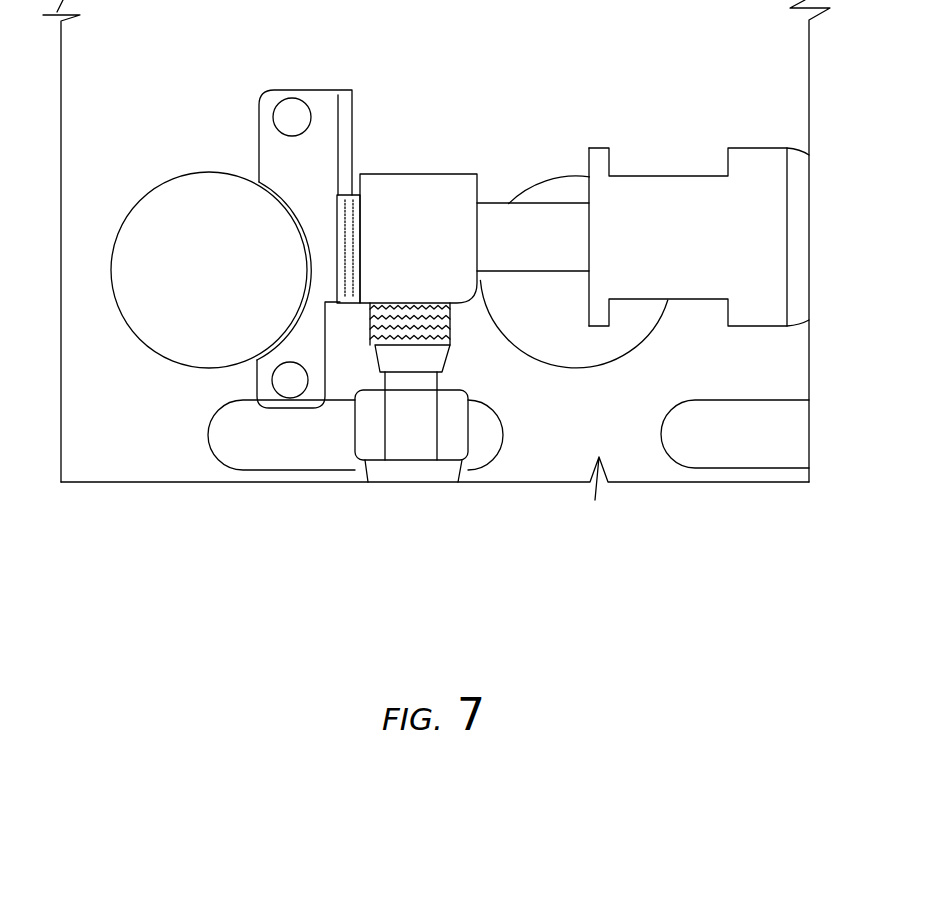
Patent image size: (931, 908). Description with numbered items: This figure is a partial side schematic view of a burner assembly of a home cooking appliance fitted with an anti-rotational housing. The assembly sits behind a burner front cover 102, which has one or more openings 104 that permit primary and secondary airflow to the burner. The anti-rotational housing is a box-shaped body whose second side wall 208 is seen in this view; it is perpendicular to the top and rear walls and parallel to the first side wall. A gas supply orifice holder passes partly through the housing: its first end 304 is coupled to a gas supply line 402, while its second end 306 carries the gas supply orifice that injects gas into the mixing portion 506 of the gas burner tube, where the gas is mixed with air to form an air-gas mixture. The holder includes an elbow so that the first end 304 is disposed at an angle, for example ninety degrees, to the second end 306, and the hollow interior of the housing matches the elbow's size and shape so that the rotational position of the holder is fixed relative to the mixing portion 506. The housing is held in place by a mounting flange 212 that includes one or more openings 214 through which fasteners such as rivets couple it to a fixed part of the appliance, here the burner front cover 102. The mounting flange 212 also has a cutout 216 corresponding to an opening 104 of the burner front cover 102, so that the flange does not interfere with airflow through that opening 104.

The burner front cover 102 is at (133, 468).
The opening 104 is at (160, 185).
The mounting flange 212 is at (265, 214).
The opening 214 is at (290, 98).
The cutout 216 is at (273, 195).
The second side wall 208 is at (436, 195).
The second end 306 is at (490, 203).
The mixing portion 506 is at (742, 148).
The first end 304 is at (458, 350).
The gas supply line 402 is at (415, 482).